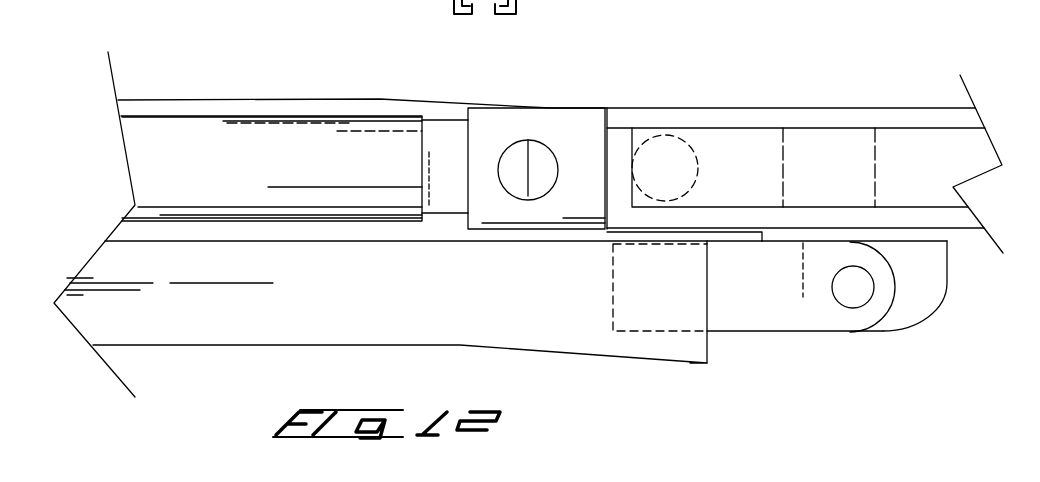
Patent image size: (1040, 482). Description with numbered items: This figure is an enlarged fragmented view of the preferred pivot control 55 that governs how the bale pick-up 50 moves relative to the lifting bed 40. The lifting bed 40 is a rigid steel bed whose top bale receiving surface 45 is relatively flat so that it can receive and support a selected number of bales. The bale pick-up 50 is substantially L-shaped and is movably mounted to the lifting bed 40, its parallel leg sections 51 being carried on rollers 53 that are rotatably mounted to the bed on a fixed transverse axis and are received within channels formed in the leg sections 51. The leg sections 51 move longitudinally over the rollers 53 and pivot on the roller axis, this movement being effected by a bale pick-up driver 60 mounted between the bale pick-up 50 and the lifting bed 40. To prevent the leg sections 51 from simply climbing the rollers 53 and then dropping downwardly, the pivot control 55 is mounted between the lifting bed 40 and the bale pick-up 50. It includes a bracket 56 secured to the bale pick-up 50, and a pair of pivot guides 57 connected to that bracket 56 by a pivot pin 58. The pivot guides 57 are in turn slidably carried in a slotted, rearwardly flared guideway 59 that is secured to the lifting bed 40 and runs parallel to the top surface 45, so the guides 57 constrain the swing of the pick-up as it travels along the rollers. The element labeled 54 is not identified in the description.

The lifting bed 40 is at (305, 90).
The top bale receiving surface 45 is at (220, 100).
The bale pick-up 50 is at (786, 62).
The leg sections 51 is at (920, 117).
The rollers 53 is at (675, 160).
The flange 54 is at (617, 162).
The pivot control 55 is at (822, 345).
The bracket 56 is at (922, 275).
The pivot guides 57 is at (750, 305).
The pivot pin 58 is at (857, 300).
The guideway 59 is at (457, 345).
The bale pick-up driver 60 is at (143, 104).